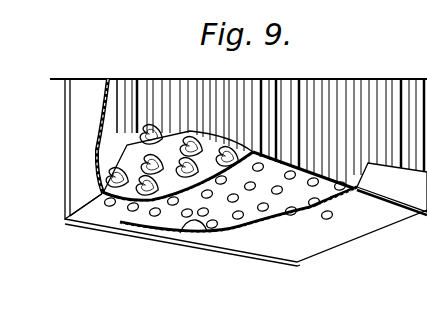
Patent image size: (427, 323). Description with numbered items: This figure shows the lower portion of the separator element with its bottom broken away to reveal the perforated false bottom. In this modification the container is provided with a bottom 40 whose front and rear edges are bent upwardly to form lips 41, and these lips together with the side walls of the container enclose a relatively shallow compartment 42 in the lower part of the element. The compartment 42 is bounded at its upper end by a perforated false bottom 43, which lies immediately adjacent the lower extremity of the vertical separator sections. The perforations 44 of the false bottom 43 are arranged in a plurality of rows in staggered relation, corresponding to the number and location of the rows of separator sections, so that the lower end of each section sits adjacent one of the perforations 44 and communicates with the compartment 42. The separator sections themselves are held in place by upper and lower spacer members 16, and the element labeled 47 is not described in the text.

The spacer member 16 is at (97, 162).
The bottom 40 is at (320, 240).
The lip 41 is at (412, 197).
The compartment 42 is at (157, 216).
The perforated false bottom 43 is at (107, 211).
The perforation 44 is at (137, 205).
The bars 47 is at (426, 240).